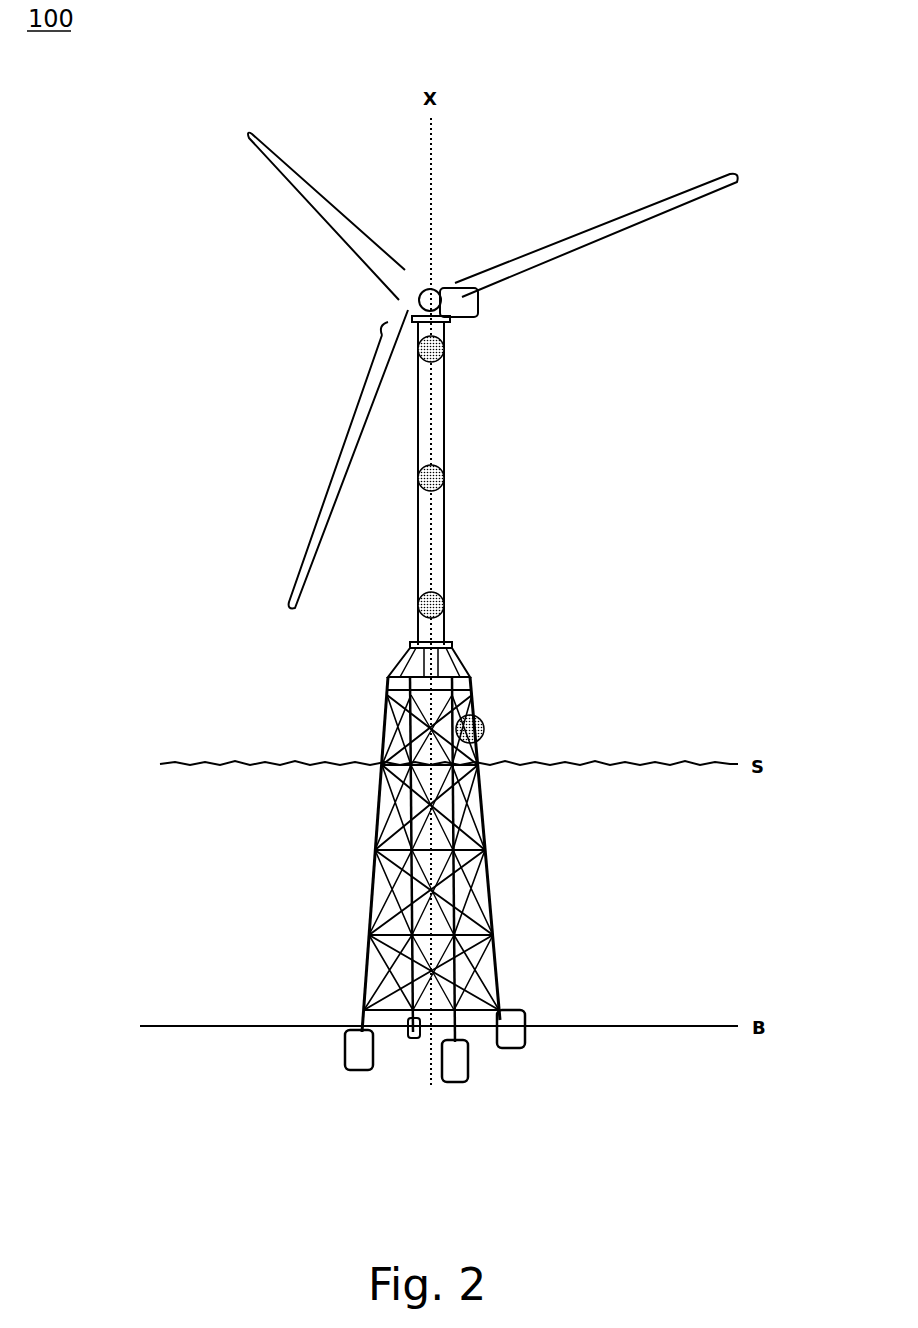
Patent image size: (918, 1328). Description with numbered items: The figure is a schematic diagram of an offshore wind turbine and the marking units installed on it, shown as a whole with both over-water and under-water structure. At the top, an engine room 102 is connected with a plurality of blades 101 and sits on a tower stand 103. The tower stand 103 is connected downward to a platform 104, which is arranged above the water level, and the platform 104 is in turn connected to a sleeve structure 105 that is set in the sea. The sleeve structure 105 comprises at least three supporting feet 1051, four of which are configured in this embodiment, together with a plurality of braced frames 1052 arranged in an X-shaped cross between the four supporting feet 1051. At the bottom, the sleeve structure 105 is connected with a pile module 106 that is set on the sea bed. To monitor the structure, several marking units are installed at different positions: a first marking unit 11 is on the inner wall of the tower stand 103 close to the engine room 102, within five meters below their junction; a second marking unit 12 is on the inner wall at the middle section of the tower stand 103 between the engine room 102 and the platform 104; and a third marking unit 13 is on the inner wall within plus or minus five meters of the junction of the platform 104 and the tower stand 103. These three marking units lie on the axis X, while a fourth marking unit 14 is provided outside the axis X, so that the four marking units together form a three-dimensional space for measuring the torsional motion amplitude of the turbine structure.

The blades 101 is at (575, 226).
The engine room 102 is at (468, 300).
The tower stand 103 is at (445, 432).
The platform 104 is at (455, 648).
The sleeve structure 105 is at (470, 849).
The supporting feet 1051 is at (505, 965).
The braced frames 1052 is at (490, 840).
The pile module 106 is at (468, 1068).
The first marking unit 11 is at (444, 349).
The second marking unit 12 is at (444, 480).
The third marking unit 13 is at (444, 605).
The fourth marking unit 14 is at (484, 728).